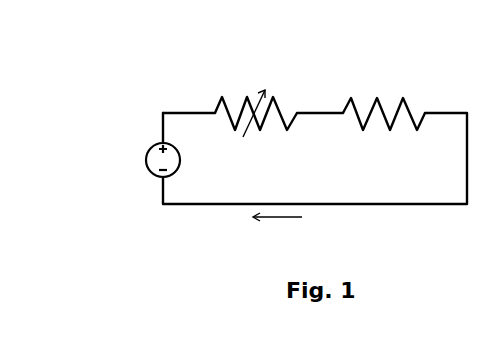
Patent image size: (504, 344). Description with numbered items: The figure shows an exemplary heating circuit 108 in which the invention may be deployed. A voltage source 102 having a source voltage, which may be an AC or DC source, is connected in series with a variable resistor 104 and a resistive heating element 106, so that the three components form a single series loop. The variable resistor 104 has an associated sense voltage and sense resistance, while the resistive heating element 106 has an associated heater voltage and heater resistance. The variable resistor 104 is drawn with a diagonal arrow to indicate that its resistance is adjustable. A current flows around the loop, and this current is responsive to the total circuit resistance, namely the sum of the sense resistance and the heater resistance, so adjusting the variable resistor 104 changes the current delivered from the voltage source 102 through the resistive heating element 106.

The circuit 108 is at (147, 62).
The voltage source 102 is at (150, 171).
The variable resistor 104 is at (277, 103).
The resistive heating element 106 is at (413, 103).